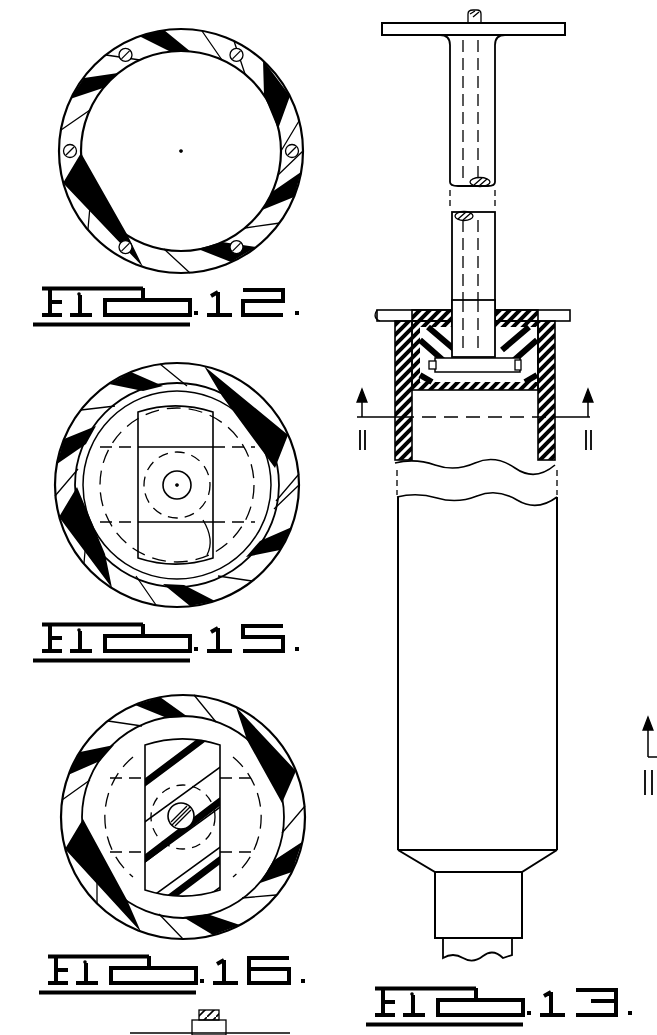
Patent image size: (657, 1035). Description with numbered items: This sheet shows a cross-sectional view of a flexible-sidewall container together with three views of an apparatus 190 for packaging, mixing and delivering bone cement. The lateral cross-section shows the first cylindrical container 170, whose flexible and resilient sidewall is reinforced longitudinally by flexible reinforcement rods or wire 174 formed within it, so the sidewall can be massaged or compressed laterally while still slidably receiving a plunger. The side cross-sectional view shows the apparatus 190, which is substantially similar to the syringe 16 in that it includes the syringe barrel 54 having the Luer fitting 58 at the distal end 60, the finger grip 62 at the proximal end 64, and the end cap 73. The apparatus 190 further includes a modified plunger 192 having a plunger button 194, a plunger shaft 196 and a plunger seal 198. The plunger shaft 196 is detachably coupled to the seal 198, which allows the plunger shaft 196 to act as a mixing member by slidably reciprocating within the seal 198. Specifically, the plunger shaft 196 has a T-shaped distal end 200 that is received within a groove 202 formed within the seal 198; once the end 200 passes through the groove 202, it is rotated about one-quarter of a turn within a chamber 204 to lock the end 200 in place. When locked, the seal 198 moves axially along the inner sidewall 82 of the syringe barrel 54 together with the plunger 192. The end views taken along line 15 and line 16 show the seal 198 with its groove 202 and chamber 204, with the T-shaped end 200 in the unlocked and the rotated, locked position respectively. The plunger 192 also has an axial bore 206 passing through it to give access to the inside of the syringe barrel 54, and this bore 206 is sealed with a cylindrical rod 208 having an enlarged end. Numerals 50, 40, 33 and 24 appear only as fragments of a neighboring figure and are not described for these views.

In FIG. 12, the first cylindrical container 170 is at (93, 80).
In FIG. 12, the flexible reinforcement rods or wire 174 is at (234, 60).
In FIG. 15, the syringe barrel 54 is at (87, 415).
In FIG. 16, the syringe barrel 54 is at (95, 730).
In FIG. 13, the syringe barrel 54 is at (557, 600).
In FIG. 15, the inner sidewall 82 is at (200, 396).
In FIG. 16, the inner sidewall 82 is at (270, 822).
In FIG. 13, the inner sidewall 82 is at (545, 452).
In FIG. 15, the groove 202 is at (207, 418).
In FIG. 16, the groove 202 is at (220, 825).
In FIG. 13, the groove 202 is at (460, 388).
In FIG. 15, the T-shaped distal end 200 is at (205, 522).
In FIG. 16, the T-shaped distal end 200 is at (200, 748).
In FIG. 13, the T-shaped distal end 200 is at (432, 363).
In FIG. 15, the chamber 204 is at (100, 508).
In FIG. 16, the chamber 204 is at (112, 852).
In FIG. 13, the chamber 204 is at (522, 366).
In FIG. 16, the cylindrical rod 208 is at (193, 810).
In FIG. 13, the cylindrical rod 208 is at (472, 12).
In FIG. 13, the apparatus 190 is at (567, 162).
In FIG. 13, the plunger button 194 is at (565, 31).
In FIG. 13, the modified plunger 192 is at (495, 92).
In FIG. 13, the plunger shaft 196 is at (497, 238).
In FIG. 13, the axial bore 206 is at (452, 247).
In FIG. 13, the finger grip 62 is at (565, 313).
In FIG. 13, the proximal end 64 is at (540, 318).
In FIG. 13, the plunger seal 198 is at (428, 318).
In FIG. 13, the line 15— 15 is at (476, 402).
In FIG. 13, the syringe 16 is at (636, 736).
In FIG. 13, the Luer fitting 58 is at (508, 900).
In FIG. 13, the end cap 73 is at (512, 952).
In FIG. 13, the distal end 60 is at (440, 940).
In FIG. 16, the fragment 50 is at (145, 1032).
In FIG. 16, the fragment 40 is at (222, 1012).
In FIG. 16, the fragment 33 is at (96, 1028).
In FIG. 16, the fragment 24 is at (318, 1028).